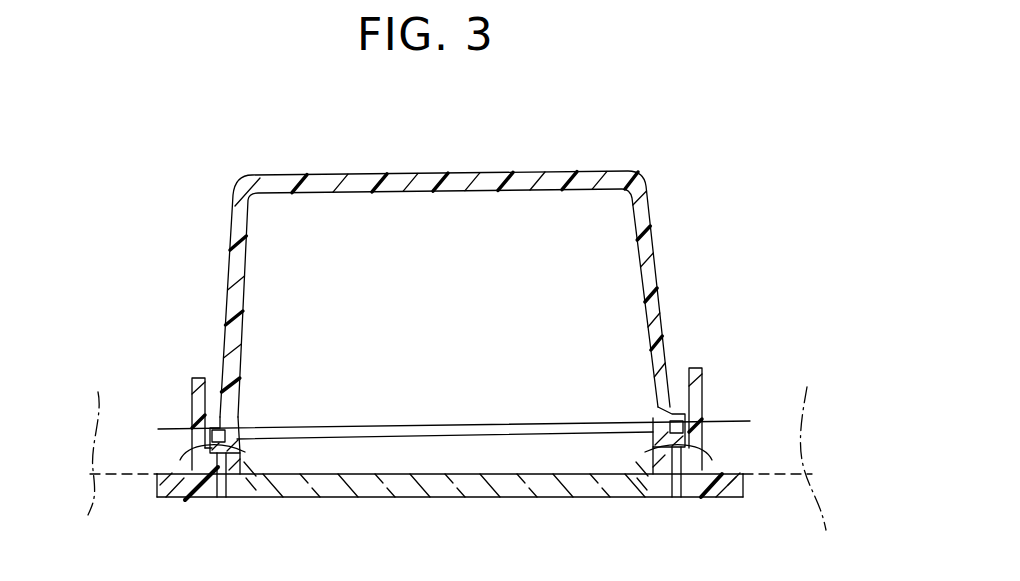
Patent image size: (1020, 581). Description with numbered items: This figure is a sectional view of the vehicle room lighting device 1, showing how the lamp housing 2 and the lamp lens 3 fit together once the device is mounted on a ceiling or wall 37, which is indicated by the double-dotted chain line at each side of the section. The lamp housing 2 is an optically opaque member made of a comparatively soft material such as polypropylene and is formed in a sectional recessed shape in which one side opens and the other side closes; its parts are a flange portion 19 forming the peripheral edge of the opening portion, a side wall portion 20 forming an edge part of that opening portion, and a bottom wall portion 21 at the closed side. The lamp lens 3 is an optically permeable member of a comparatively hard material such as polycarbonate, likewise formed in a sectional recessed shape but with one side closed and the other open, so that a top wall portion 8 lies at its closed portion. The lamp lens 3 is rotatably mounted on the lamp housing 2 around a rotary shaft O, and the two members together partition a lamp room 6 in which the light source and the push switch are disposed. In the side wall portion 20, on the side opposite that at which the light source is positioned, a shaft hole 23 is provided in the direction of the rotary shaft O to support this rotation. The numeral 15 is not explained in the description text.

The vehicle room lighting device 1 is at (268, 165).
The lamp housing 2 is at (413, 172).
The bottom wall portion 21 is at (552, 172).
The lamp room 6 is at (319, 262).
The side wall portion 20 is at (226, 344).
The shaft hole 23 is at (180, 460).
The boss 15 is at (245, 452).
The lamp lens 3 is at (410, 500).
The top wall portion 8 is at (475, 497).
The flange portion 19 is at (163, 497).
The ceiling or wall 37 is at (460, 476).
The rotary shaft O is at (459, 424).